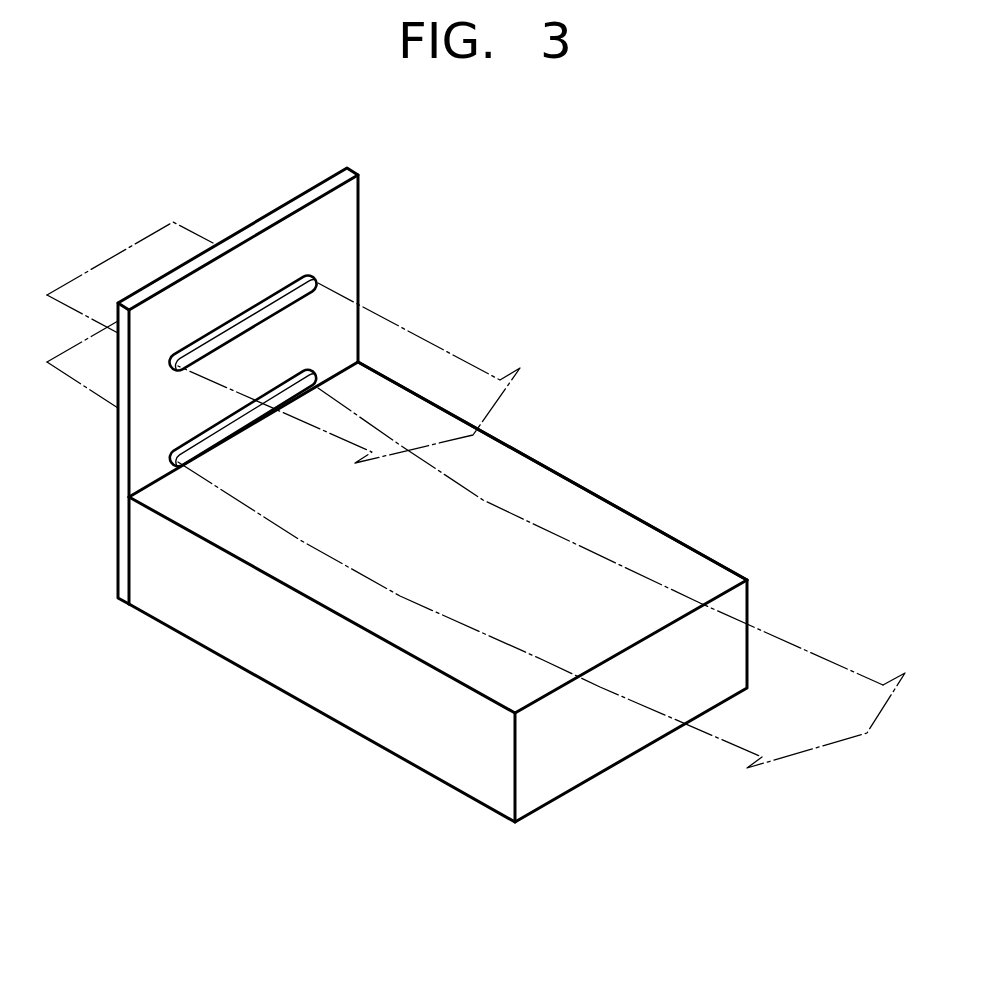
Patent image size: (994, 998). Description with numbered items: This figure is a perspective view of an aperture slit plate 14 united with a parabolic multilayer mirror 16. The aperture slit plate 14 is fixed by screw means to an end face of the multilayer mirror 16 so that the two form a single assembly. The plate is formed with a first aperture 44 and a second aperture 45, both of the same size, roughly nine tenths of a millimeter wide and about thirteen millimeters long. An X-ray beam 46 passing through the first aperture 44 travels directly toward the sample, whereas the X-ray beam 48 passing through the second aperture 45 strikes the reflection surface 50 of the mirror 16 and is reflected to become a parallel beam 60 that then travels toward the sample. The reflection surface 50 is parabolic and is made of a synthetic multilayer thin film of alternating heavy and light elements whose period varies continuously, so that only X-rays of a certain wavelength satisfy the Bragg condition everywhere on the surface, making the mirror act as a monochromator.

The aperture slit plate 14 is at (343, 210).
The multilayer mirror 16 is at (338, 703).
The first aperture 44 is at (275, 298).
The second aperture 45 is at (291, 379).
The X-ray beam 46 is at (425, 342).
The X-ray beam 48 is at (240, 495).
The reflection surface 50 is at (607, 527).
The parallel beam 60 is at (795, 643).